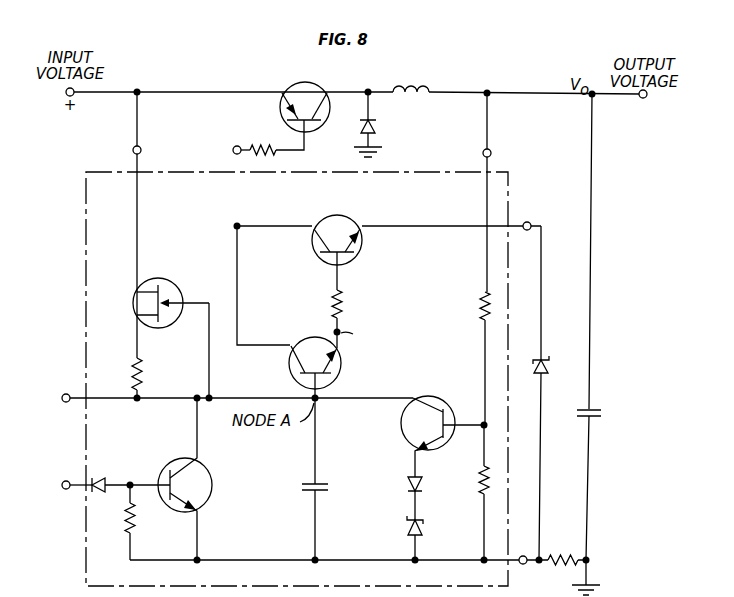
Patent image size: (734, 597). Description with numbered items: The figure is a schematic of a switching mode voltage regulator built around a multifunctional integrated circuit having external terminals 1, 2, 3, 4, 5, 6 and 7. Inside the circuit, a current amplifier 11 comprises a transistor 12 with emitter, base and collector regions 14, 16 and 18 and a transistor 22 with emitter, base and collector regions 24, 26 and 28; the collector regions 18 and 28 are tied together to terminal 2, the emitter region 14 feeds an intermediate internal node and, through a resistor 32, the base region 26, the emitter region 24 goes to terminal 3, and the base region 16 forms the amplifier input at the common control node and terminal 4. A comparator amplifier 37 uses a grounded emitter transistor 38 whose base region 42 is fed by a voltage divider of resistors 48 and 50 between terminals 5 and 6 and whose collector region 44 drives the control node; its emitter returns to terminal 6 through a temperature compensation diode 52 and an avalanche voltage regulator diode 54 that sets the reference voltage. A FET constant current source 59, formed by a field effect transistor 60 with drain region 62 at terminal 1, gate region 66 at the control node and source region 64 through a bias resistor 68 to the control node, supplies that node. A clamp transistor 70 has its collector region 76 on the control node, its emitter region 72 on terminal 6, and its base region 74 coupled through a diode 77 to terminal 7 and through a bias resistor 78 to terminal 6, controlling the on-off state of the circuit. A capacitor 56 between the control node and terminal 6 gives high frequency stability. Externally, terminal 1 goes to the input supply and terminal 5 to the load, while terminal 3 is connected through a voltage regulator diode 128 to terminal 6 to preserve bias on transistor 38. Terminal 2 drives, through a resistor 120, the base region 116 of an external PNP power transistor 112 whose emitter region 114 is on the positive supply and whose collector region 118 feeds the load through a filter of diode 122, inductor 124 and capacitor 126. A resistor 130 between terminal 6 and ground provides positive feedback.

The external terminal 1 is at (143, 192).
The external terminal 2 is at (235, 151).
The external terminal 3 is at (451, 216).
The external terminal 4 is at (235, 388).
The external terminal 5 is at (493, 192).
The external terminal 6 is at (360, 550).
The external terminal 7 is at (73, 476).
The current amplifier 11 is at (332, 281).
The transistor 12 is at (331, 376).
The emitter region 14 is at (341, 350).
The base region 16 is at (307, 393).
The collector region 18 is at (294, 361).
The transistor 22 is at (348, 255).
The emitter region 24 is at (359, 233).
The base region 26 is at (336, 277).
The collector region 28 is at (312, 238).
The resistor 32 is at (331, 305).
The comparator amplifier 37 is at (444, 410).
The grounded emitter transistor 38 is at (452, 406).
The base region 42 is at (462, 428).
The collector region 44 is at (420, 396).
The resistor 48 is at (480, 306).
The resistor 50 is at (478, 481).
The temperature compensation diode 52 is at (406, 484).
The voltage regulator diode 54 is at (406, 529).
The capacitor 56 is at (303, 489).
The FET constant current source 59 is at (192, 221).
The field effect transistor 60 is at (168, 286).
The drain region 62 is at (138, 242).
The source region 64 is at (143, 318).
The gate region 66 is at (209, 302).
The bias resistor 68 is at (142, 374).
The clamp transistor 70 is at (172, 469).
The emitter region 72 is at (191, 511).
The base region 74 is at (146, 483).
The collector region 76 is at (201, 463).
The diode 77 is at (96, 479).
The bias resistor 78 is at (124, 517).
The external PNP power transistor 112 is at (315, 121).
The emitter region 114 is at (283, 97).
The base region 116 is at (304, 146).
The collector region 118 is at (325, 100).
The resistor 120 is at (265, 146).
The diode 122 is at (376, 127).
The inductor 124 is at (413, 89).
The capacitor 126 is at (597, 417).
The voltage regulator diode 128 is at (545, 376).
The resistor 130 is at (563, 555).